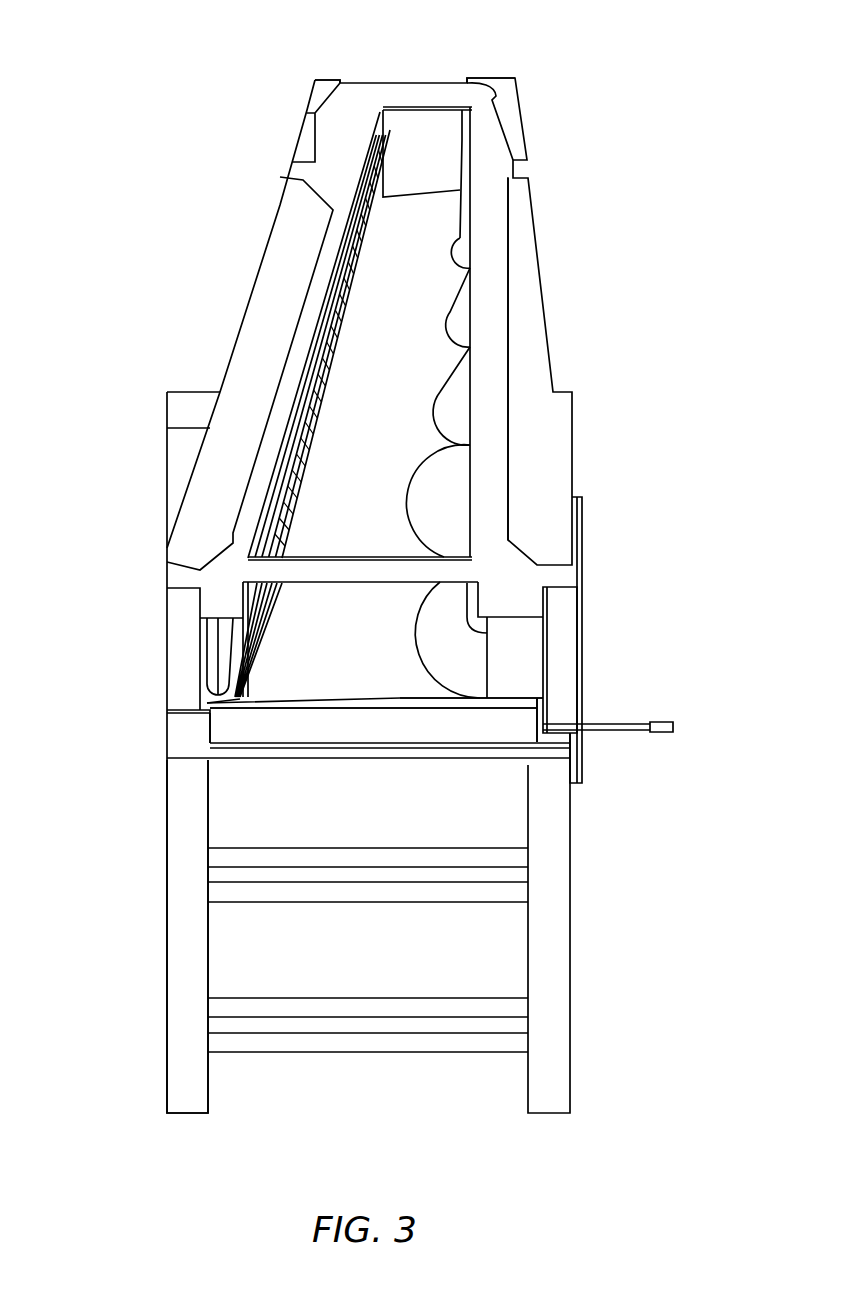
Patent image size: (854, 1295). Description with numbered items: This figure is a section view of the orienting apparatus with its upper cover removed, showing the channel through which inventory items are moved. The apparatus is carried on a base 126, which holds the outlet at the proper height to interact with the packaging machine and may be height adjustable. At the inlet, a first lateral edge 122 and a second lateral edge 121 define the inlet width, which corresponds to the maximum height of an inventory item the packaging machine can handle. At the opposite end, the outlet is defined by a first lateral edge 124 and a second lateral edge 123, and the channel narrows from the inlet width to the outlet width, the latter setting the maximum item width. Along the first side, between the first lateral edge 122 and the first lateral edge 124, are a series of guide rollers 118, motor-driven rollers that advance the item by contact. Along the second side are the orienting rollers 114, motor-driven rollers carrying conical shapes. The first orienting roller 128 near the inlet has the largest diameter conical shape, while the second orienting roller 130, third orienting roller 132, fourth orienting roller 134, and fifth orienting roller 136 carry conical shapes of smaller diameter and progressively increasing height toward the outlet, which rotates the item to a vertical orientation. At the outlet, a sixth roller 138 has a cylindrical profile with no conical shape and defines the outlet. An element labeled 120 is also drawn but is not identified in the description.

The orienting rollers 114 is at (462, 382).
The guide rollers 118 is at (226, 647).
The plate 120 is at (222, 725).
The second lateral edge 121 is at (490, 698).
The first lateral edge 122 is at (229, 706).
The second lateral edge 123 is at (468, 80).
The first lateral edge 124 is at (340, 80).
The base 126 is at (183, 922).
The first orienting roller 128 is at (437, 634).
The second orienting roller 130 is at (440, 506).
The third orienting roller 132 is at (438, 409).
The fourth orienting roller 134 is at (450, 324).
The fifth orienting roller 136 is at (459, 246).
The sixth roller 138 is at (463, 141).